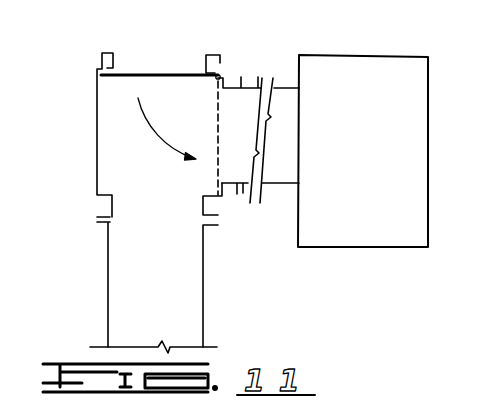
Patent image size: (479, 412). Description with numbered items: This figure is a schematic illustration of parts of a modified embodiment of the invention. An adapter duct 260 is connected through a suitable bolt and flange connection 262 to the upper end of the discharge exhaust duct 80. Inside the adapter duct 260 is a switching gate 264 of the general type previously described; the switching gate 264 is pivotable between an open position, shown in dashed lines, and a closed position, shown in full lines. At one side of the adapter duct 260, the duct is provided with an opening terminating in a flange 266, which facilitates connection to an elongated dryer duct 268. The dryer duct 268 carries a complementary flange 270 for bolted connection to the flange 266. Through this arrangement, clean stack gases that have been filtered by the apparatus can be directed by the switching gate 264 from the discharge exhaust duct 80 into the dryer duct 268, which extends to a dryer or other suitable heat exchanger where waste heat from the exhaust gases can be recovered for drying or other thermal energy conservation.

The discharge exhaust duct 80 is at (167, 288).
The adapter duct 260 is at (107, 102).
The bolt and flange connection 262 is at (100, 218).
The switching gate 264 is at (158, 78).
The flange 266 is at (241, 81).
The dryer duct 268 is at (236, 159).
The complementary flange 270 is at (381, 151).